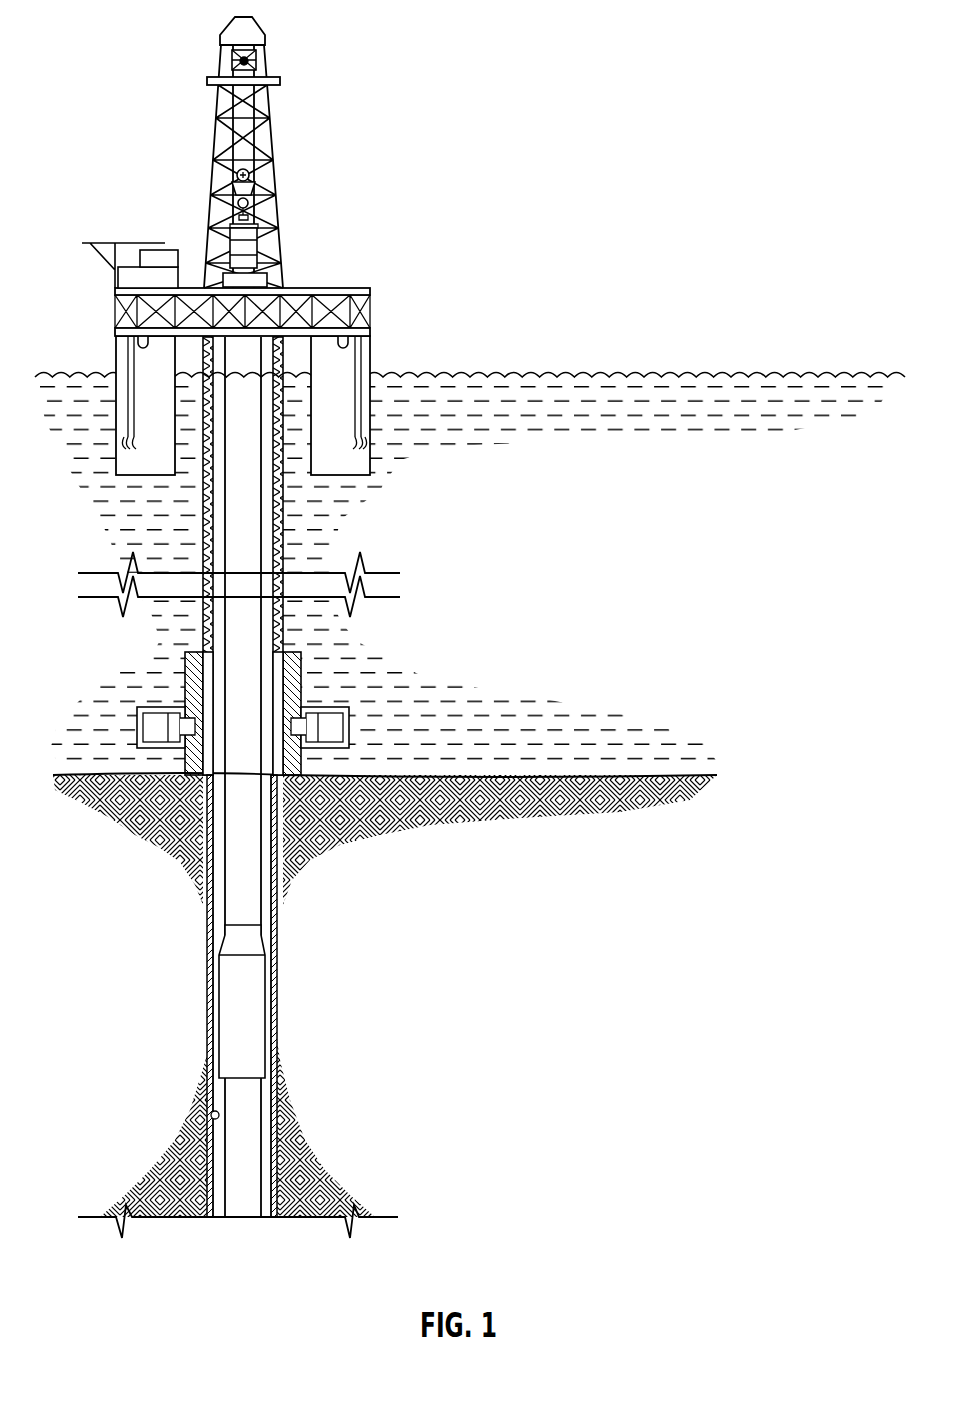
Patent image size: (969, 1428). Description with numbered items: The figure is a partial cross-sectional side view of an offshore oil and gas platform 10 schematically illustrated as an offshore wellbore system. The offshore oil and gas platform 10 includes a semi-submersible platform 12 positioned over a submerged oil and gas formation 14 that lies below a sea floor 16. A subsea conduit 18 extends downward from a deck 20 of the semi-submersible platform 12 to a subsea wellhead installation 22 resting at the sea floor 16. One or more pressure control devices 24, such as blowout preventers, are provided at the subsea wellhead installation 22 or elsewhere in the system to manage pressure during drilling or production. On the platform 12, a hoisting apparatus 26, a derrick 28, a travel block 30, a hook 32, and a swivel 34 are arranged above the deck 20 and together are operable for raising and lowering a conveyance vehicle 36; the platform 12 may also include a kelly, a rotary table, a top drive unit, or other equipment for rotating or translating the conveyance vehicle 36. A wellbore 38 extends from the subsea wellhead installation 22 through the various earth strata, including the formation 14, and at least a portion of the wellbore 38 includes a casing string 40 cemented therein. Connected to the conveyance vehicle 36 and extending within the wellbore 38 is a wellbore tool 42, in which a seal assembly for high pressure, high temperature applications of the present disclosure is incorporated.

The offshore oil and gas platform 10 is at (376, 147).
The semi-submersible platform 12 is at (247, 176).
The oil and gas formation 14 is at (515, 978).
The sea floor 16 is at (717, 775).
The subsea conduit 18 is at (285, 500).
The deck 20 is at (372, 327).
The subsea wellhead installation 22 is at (186, 673).
The pressure control device 24 is at (350, 726).
The hoisting apparatus 26 is at (262, 272).
The derrick 28 is at (220, 57).
The travel block 30 is at (237, 176).
The hook 32 is at (234, 189).
The swivel 34 is at (258, 230).
The conveyance vehicle 36 is at (208, 906).
The wellbore 38 is at (211, 1113).
The casing string 40 is at (280, 1006).
The wellbore tool 42 is at (224, 982).